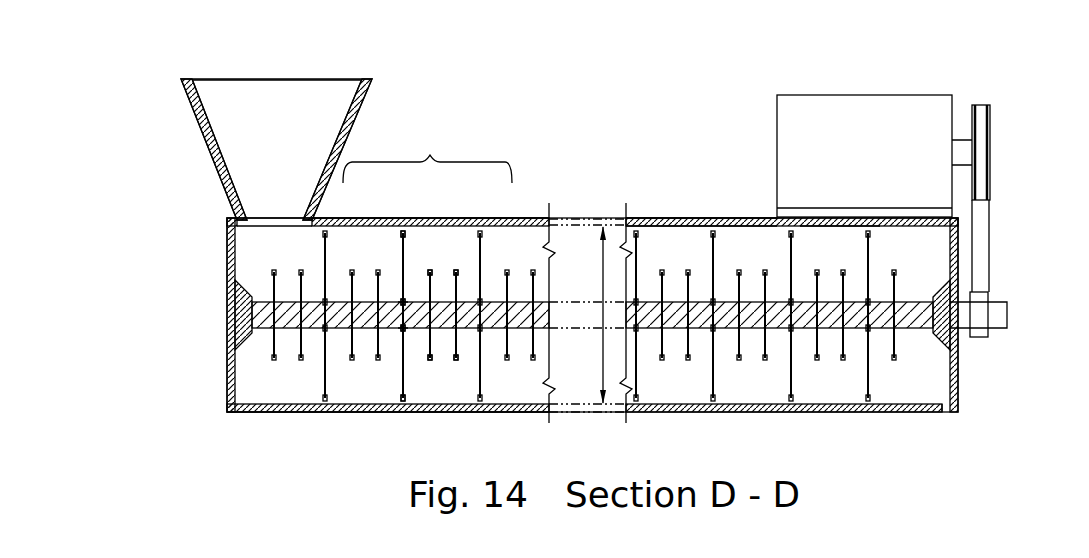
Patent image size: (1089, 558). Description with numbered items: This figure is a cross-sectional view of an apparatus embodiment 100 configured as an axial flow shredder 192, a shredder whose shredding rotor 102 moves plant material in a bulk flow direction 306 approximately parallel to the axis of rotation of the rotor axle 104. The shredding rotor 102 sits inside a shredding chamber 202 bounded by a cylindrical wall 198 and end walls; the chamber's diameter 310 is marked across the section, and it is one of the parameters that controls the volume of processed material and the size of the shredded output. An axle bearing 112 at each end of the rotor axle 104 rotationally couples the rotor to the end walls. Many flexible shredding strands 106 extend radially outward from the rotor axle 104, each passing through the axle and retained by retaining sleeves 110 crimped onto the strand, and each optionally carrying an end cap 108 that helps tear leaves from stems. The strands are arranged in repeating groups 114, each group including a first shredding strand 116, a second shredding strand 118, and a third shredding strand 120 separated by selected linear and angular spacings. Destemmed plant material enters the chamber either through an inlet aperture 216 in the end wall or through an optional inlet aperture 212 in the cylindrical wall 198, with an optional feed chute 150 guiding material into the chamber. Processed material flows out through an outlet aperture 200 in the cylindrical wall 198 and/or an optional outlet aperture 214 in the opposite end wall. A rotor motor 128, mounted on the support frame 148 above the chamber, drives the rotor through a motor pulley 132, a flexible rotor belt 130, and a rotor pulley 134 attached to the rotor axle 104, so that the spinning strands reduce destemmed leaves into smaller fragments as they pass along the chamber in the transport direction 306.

The apparatus embodiment 100 is at (516, 88).
The shredding rotor 102 is at (652, 270).
The rotor axle 104 is at (1007, 300).
The shredding strands 106 is at (376, 292).
The end cap 108 is at (414, 412).
The retaining sleeves 110 is at (404, 330).
The axle bearing 112 is at (248, 296).
The group of shredding strands 114 is at (430, 156).
The first shredding strand 116 is at (402, 262).
The second shredding strand 118 is at (430, 287).
The third shredding strand 120 is at (457, 285).
The rotor motor 128 is at (890, 95).
The rotor belt 130 is at (988, 220).
The motor pulley 132 is at (993, 105).
The rotor pulley 134 is at (985, 338).
The support frame 148 is at (637, 218).
The feed chute 150 is at (218, 76).
The axial flow shredder 192 is at (680, 88).
The cylindrical wall 198 is at (525, 218).
The outlet aperture 200 is at (912, 390).
The shredding chamber 202 is at (855, 261).
The inlet aperture 212 is at (272, 115).
The outlet aperture 214 is at (938, 387).
The inlet aperture 216 is at (244, 371).
The material transport direction 306 is at (507, 448).
The diameter of the shredding chamber 310 is at (600, 331).